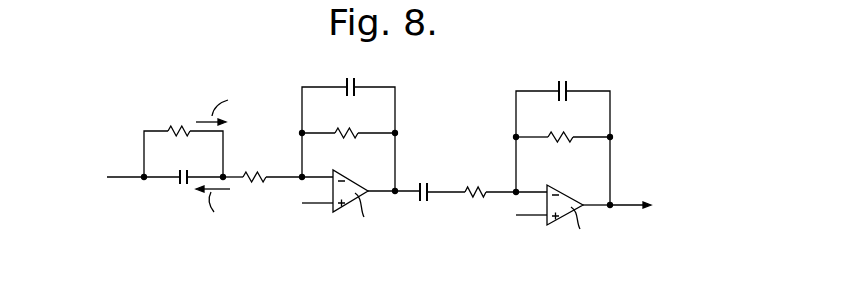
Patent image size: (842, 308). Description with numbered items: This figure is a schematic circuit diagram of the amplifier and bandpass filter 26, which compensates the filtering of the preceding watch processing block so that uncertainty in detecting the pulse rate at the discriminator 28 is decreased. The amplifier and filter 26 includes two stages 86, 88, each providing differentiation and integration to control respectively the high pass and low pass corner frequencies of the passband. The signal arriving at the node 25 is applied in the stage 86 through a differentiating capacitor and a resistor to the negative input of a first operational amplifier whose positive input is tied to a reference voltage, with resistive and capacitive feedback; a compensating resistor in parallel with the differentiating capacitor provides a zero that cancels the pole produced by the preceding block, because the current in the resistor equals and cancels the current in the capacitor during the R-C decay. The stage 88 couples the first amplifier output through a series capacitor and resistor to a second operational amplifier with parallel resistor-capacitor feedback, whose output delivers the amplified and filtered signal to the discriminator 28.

The node 25 is at (85, 177).
The amplifier and bandpass filter 26 is at (416, 177).
The discriminator 28 is at (660, 206).
The stage 86 is at (281, 168).
The stage 88 is at (515, 179).